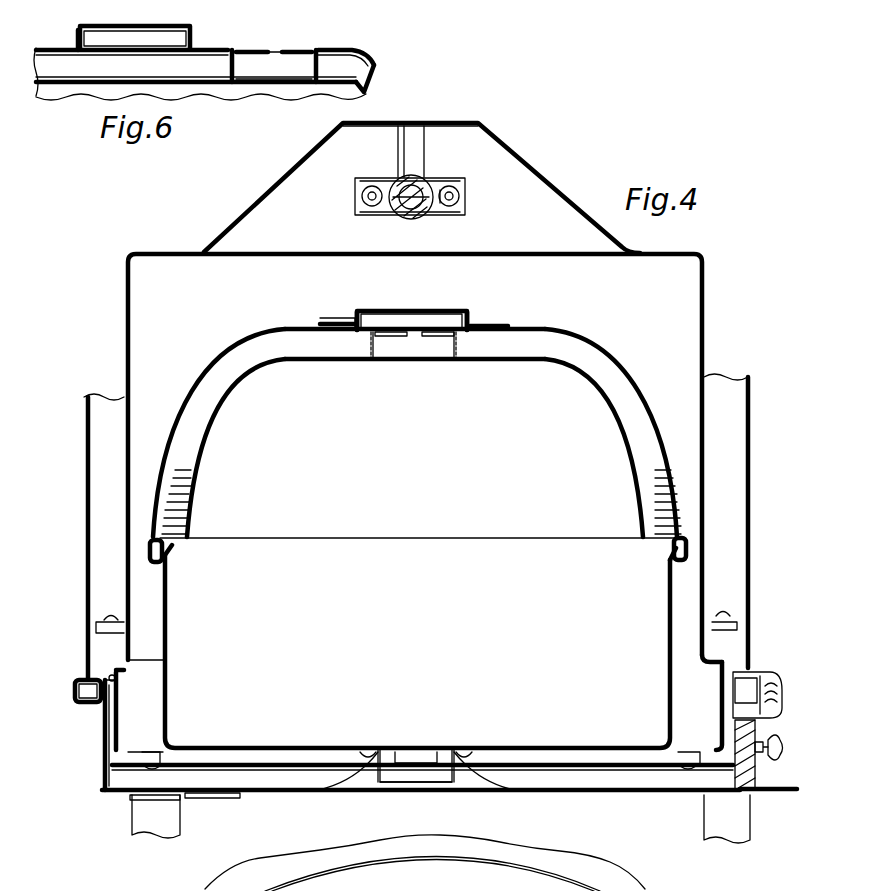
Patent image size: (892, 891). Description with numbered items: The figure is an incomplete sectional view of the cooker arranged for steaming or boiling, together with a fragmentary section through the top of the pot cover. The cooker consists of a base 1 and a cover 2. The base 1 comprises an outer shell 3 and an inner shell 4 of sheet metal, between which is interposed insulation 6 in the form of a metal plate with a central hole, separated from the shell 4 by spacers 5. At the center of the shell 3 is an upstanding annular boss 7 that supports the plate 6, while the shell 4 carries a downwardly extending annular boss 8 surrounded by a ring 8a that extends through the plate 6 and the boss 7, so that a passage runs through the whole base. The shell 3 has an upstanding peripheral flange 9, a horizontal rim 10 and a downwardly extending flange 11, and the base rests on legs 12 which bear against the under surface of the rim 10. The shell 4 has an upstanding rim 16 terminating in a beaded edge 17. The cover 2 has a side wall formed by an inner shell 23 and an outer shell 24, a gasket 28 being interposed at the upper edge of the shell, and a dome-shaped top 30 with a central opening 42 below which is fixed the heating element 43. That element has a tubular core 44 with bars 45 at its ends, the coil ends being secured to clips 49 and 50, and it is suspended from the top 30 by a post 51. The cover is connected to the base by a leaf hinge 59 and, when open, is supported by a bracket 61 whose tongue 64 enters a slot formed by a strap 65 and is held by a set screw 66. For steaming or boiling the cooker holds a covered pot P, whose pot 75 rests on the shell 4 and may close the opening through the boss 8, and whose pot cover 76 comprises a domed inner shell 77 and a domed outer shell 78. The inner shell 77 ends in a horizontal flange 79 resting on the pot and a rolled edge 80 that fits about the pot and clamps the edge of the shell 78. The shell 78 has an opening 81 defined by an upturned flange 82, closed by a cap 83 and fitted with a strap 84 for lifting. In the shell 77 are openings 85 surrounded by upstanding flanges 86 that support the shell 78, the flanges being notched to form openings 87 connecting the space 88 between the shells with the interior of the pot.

In FIG. 4, the base 1 is at (90, 764).
In FIG. 4, the cover 2 is at (112, 268).
In FIG. 4, the outer shell 3 is at (268, 792).
In FIG. 4, the inner shell 4 is at (128, 748).
In FIG. 4, the spacers 5 is at (162, 768).
In FIG. 4, the insulation 6 is at (276, 765).
In FIG. 4, the upstanding annular boss 7 is at (370, 790).
In FIG. 4, the downwardly extending annular boss 8 is at (412, 752).
In FIG. 4, the ring 8a is at (398, 766).
In FIG. 4, the upstanding peripheral flange 9 is at (100, 730).
In FIG. 4, the rim 10 is at (80, 680).
In FIG. 4, the downwardly extending flange 11 is at (76, 702).
In FIG. 4, the legs 12 is at (152, 832).
In FIG. 4, the upstanding rim 16 is at (121, 691).
In FIG. 4, the beaded edge 17 is at (124, 646).
In FIG. 4, the inner shell 23 is at (132, 326).
In FIG. 4, the outer shell 24 is at (86, 492).
In FIG. 4, the gasket 28 is at (432, 874).
In FIG. 4, the top 30 is at (228, 217).
In FIG. 4, the central opening 42 is at (384, 124).
In FIG. 4, the heating element 43 is at (392, 184).
In FIG. 4, the tubular core 44 is at (411, 215).
In FIG. 4, the bars 45 is at (456, 184).
In FIG. 4, the clip 49 is at (378, 216).
In FIG. 4, the clip 50 is at (432, 215).
In FIG. 4, the post 51 is at (422, 147).
In FIG. 4, the leaf hinge 59 is at (768, 676).
In FIG. 4, the bracket 61 is at (782, 790).
In FIG. 4, the tongue 64 is at (734, 736).
In FIG. 4, the strap 65 is at (778, 712).
In FIG. 4, the set screw 66 is at (782, 746).
In FIG. 4, the pot 75 is at (240, 755).
In FIG. 4, the pot cover 76 is at (418, 599).
In FIG. 6, the inner shell 77 is at (368, 90).
In FIG. 4, the inner shell 77 is at (212, 458).
In FIG. 6, the outer shell 78 is at (356, 50).
In FIG. 4, the outer shell 78 is at (212, 348).
In FIG. 4, the horizontal flange 79 is at (180, 528).
In FIG. 4, the rolled edge 80 is at (160, 566).
In FIG. 6, the opening 81 is at (196, 67).
In FIG. 4, the opening 81 is at (466, 318).
In FIG. 6, the upturned flange 82 is at (76, 45).
In FIG. 4, the upturned flange 82 is at (360, 318).
In FIG. 6, the cap 83 is at (180, 24).
In FIG. 4, the cap 83 is at (408, 311).
In FIG. 4, the strap 84 is at (328, 317).
In FIG. 6, the openings 85 is at (275, 77).
In FIG. 6, the upstanding flange 86 is at (320, 52).
In FIG. 4, the upstanding flange 86 is at (397, 336).
In FIG. 6, the openings 87 is at (258, 52).
In FIG. 4, the openings 87 is at (392, 337).
In FIG. 6, the space 88 is at (196, 66).
In FIG. 4, the space 88 is at (256, 346).
In FIG. 4, the covered pot P is at (620, 342).